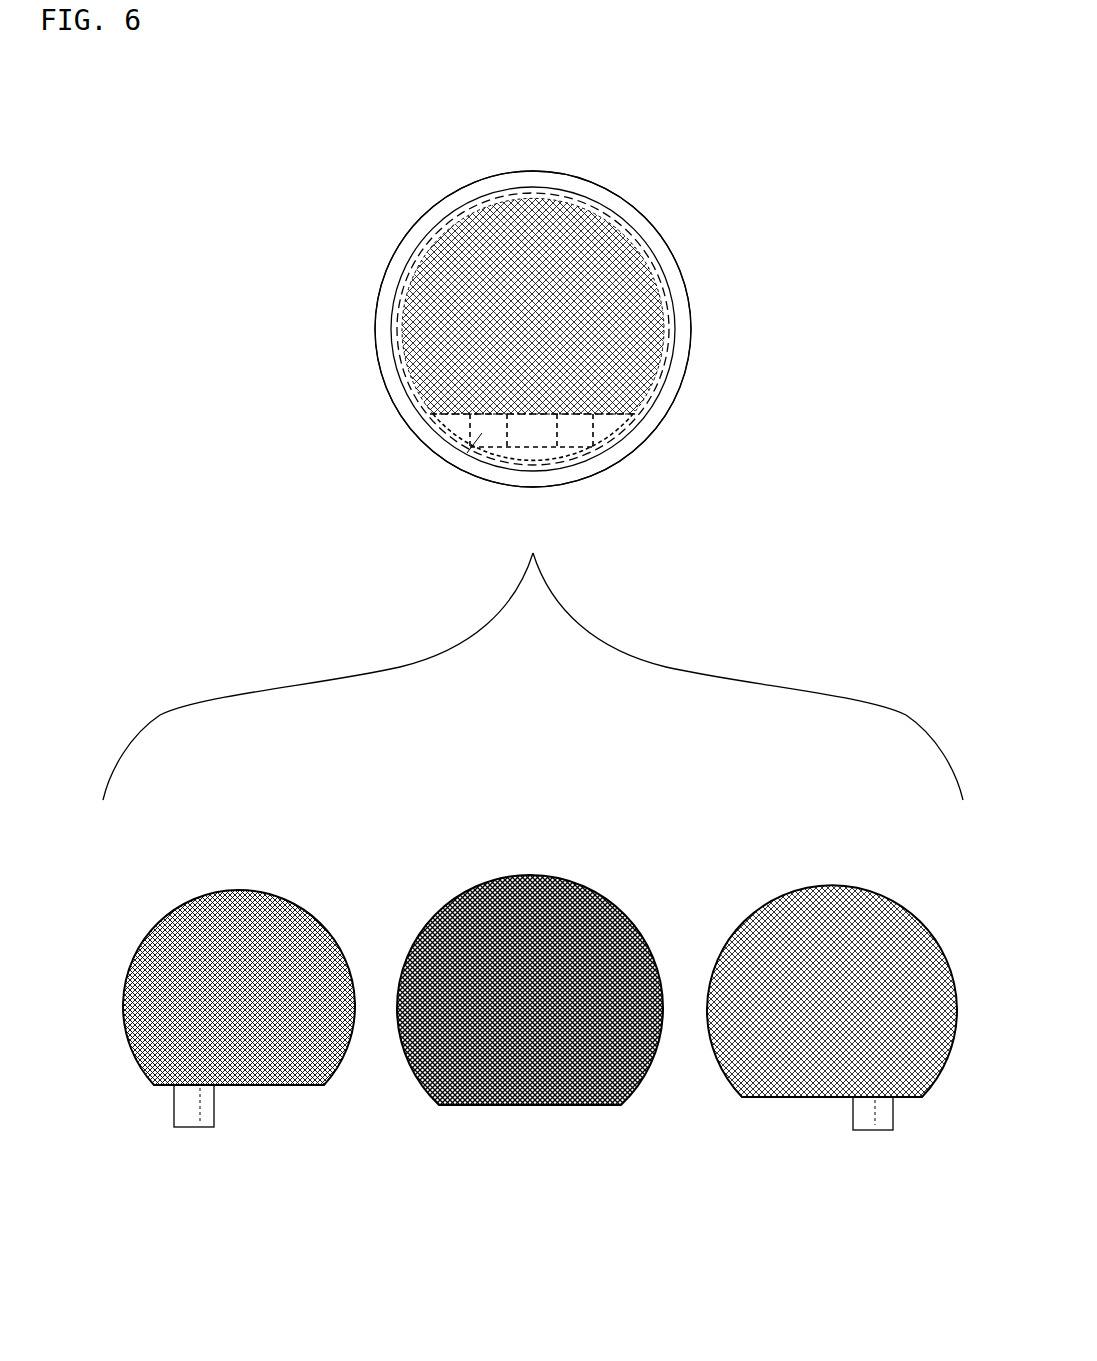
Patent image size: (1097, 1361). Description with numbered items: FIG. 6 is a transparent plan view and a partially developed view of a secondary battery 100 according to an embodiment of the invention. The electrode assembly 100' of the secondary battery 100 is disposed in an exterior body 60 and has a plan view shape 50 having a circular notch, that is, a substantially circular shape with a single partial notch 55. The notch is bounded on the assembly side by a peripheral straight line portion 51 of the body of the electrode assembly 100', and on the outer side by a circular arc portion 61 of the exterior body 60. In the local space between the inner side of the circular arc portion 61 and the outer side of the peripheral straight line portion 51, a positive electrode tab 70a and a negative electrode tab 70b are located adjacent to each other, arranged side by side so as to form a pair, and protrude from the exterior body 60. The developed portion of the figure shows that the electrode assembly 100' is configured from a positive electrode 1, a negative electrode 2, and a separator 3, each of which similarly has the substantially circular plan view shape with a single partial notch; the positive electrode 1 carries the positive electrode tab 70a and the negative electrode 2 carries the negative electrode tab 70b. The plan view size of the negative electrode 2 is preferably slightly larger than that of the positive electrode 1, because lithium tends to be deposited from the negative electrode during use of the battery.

The secondary battery 100 is at (484, 285).
The electrode assembly 100' is at (566, 306).
The plan view shape having a circular notch 50 is at (550, 340).
The peripheral straight line portion 51 is at (456, 416).
The partial notch (space) 55 is at (530, 437).
The exterior body 60 is at (677, 375).
The circular arc portion 61 is at (478, 461).
The positive electrode tab 70a is at (458, 462).
The negative electrode tab 70b is at (572, 438).
The positive electrode 1 is at (198, 890).
The negative electrode 2 is at (842, 874).
The separator 3 is at (535, 875).